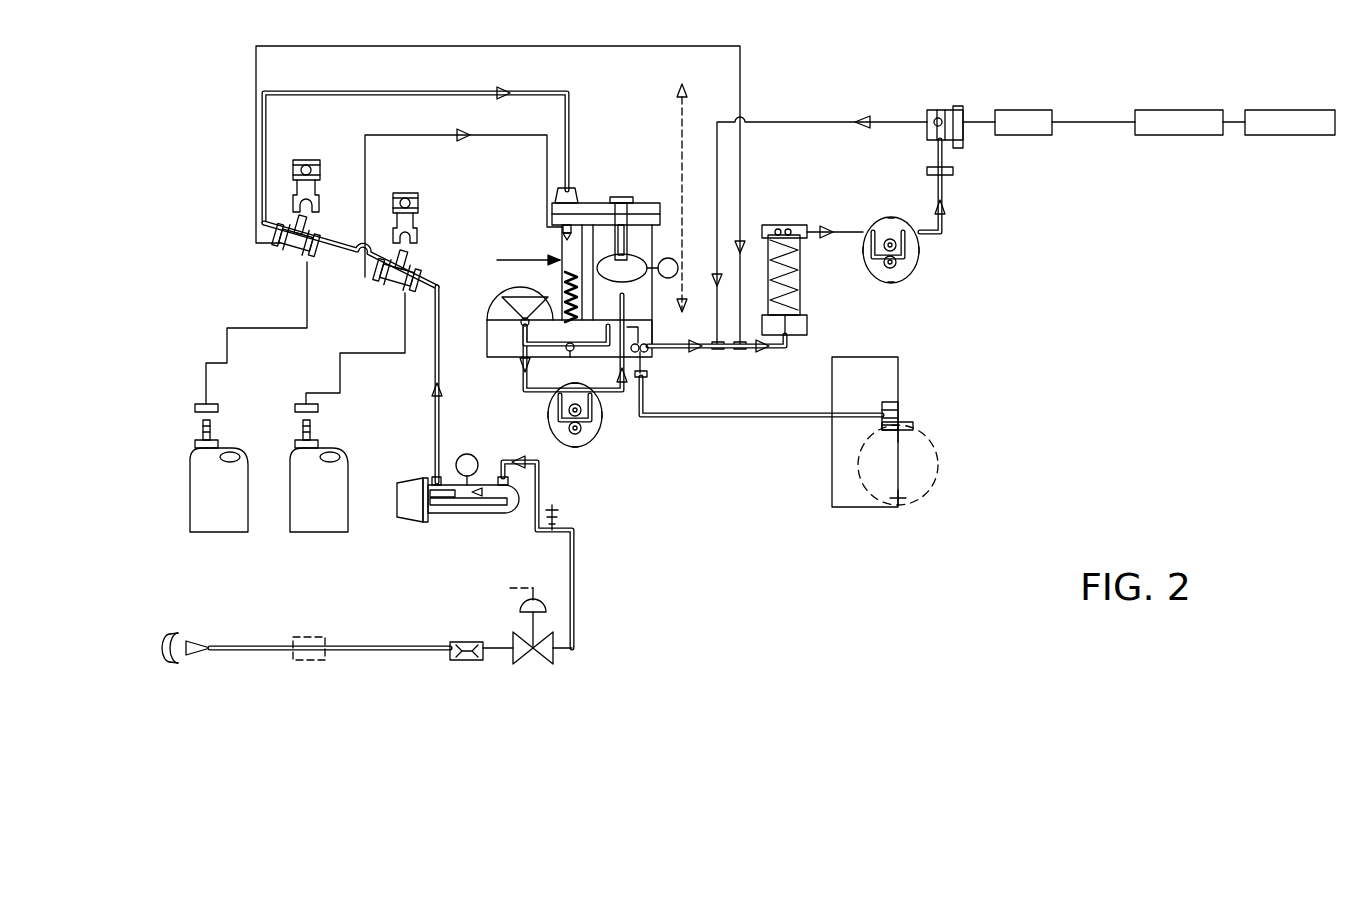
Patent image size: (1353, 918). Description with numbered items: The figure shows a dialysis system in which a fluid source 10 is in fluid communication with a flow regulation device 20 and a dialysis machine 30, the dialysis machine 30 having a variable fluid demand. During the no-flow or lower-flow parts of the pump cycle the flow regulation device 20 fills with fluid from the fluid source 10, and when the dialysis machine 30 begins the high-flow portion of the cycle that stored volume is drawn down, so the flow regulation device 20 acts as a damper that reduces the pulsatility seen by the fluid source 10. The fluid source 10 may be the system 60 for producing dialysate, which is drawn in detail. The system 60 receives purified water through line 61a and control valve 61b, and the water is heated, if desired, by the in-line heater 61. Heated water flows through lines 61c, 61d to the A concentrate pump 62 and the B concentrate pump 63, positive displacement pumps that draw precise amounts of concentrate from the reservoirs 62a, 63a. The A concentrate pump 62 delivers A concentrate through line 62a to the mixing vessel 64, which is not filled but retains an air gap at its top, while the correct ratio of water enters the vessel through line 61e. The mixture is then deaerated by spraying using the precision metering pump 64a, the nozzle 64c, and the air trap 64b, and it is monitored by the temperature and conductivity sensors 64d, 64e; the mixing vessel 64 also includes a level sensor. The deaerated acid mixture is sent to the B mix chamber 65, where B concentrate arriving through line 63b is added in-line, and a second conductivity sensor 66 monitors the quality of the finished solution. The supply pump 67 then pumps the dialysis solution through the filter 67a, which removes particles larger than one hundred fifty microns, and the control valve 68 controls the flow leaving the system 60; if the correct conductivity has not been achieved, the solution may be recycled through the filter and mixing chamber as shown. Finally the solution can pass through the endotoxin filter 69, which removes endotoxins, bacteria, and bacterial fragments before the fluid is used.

The fluid source 10 is at (1085, 122).
The flow regulation device 20 is at (1180, 110).
The dialysis machine 30 is at (1290, 110).
The system for producing dialysate 60 is at (855, 50).
The in-line heater 61 is at (463, 514).
The line 61a is at (370, 653).
The control valve 61b is at (532, 663).
The line 61c is at (437, 283).
The line 61d is at (327, 245).
The line 61e is at (383, 92).
The A concentrate pump 62 is at (395, 300).
The A concentrate reservoir and line 62a is at (488, 136).
The B concentrate pump 63 is at (288, 266).
The B concentrate reservoir 63a is at (190, 485).
The line 63b is at (256, 130).
The mixing vessel 64 is at (562, 237).
The precision metering pump 64a is at (585, 448).
The air trap 64b is at (632, 250).
The nozzle 64c is at (521, 322).
The temperature sensor 64d is at (643, 352).
The conductivity sensor 64e is at (644, 348).
The B mix chamber 65 is at (800, 282).
The second conductivity sensor 66 is at (782, 225).
The supply pump 67 is at (920, 258).
The filter 67a is at (953, 172).
The control valve 68 is at (945, 110).
The endotoxin filter 69 is at (1025, 135).